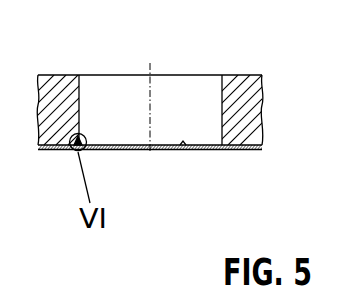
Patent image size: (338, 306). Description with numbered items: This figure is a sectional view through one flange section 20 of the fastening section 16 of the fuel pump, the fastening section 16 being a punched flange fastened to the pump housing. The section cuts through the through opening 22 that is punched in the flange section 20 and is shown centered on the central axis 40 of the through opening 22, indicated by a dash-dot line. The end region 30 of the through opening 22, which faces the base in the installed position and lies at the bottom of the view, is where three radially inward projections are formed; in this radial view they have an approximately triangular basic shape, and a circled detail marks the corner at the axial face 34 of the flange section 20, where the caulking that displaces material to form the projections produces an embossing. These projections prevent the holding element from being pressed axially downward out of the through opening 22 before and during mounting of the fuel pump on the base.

The fastening section 16 is at (243, 118).
The flange section 20 is at (58, 105).
The through opening 22 is at (80, 107).
The end region 30 is at (96, 133).
The axial face 34 is at (63, 150).
The central axis 40 is at (153, 108).